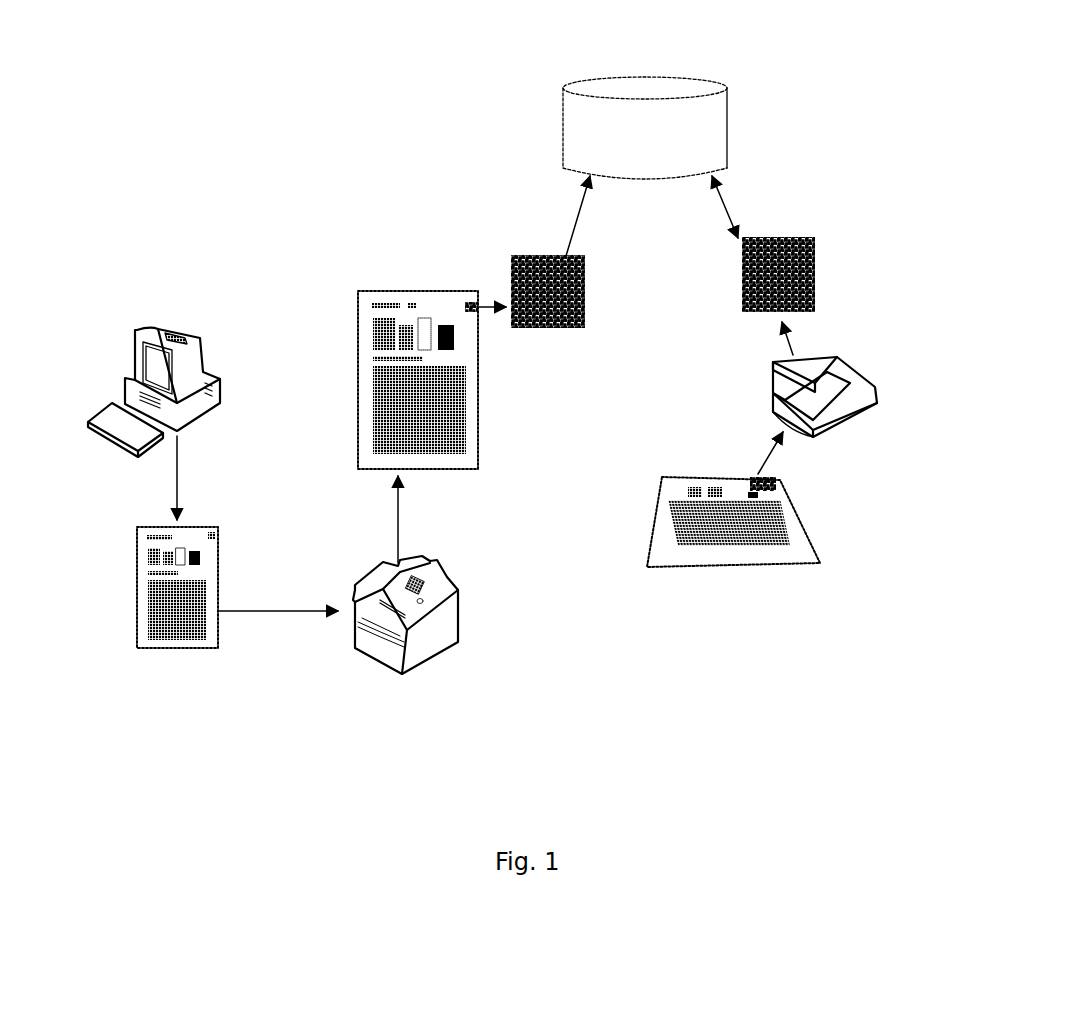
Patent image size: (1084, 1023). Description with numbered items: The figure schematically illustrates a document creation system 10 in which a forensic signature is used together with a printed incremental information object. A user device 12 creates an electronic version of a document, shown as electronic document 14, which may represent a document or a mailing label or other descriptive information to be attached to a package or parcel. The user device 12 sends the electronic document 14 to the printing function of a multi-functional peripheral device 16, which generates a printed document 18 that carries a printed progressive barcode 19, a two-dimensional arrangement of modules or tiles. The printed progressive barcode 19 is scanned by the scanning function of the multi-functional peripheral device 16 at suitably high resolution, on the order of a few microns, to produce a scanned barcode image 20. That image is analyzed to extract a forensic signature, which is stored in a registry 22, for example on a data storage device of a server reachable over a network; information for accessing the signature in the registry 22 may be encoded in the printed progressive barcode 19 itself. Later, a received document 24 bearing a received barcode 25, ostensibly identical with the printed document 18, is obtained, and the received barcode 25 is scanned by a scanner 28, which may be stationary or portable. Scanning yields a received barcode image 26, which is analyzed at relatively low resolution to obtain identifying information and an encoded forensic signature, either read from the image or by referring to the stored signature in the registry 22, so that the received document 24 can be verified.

The document creation system 10 is at (277, 176).
The user device 12 is at (182, 327).
The electronic document 14 is at (173, 650).
The multi-functional peripheral (MFP) device 16 is at (458, 645).
The printed document 18 is at (407, 290).
The printed progressive barcode 19 is at (465, 300).
The scanned barcode image 20 is at (545, 330).
The registry 22 is at (641, 76).
The received document 24 is at (713, 570).
The received barcode 25 is at (777, 487).
The received barcode image 26 is at (815, 243).
The scanner 28 is at (850, 362).